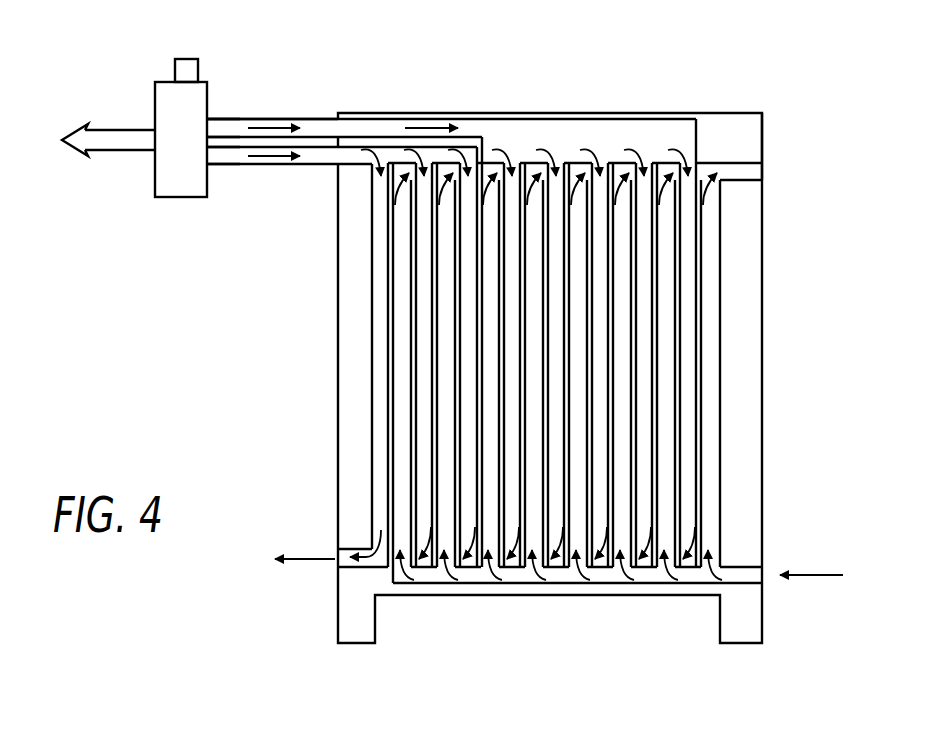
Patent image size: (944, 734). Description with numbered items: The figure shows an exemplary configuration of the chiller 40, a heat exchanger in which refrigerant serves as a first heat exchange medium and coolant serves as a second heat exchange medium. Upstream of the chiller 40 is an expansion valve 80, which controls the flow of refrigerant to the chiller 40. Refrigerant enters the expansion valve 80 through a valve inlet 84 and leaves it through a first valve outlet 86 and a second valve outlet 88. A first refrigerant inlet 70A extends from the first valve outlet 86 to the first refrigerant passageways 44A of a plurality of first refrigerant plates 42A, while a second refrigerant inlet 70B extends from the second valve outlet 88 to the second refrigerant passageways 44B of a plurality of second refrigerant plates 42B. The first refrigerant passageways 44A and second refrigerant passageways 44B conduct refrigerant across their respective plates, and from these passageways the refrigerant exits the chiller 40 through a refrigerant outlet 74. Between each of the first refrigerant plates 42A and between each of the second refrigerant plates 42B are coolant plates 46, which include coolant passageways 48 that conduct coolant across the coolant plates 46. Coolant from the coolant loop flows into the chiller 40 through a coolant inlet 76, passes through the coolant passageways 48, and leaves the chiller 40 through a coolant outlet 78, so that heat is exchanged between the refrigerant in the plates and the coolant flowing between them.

The chiller 40 is at (728, 115).
The first refrigerant plates 42A is at (470, 242).
The second refrigerant plates 42B is at (690, 350).
The first refrigerant passageways 44A is at (387, 438).
The second refrigerant passageways 44B is at (682, 387).
The coolant plates 46 is at (537, 393).
The coolant passageways 48 is at (412, 497).
The first refrigerant inlet 70A is at (237, 168).
The second refrigerant inlet 70B is at (213, 120).
The refrigerant outlet 74 is at (338, 562).
The coolant inlet 76 is at (765, 570).
The coolant outlet 78 is at (765, 169).
The expansion valve 80 is at (165, 82).
The valve inlet 84 is at (155, 130).
The first valve outlet 86 is at (212, 167).
The second valve outlet 88 is at (210, 117).